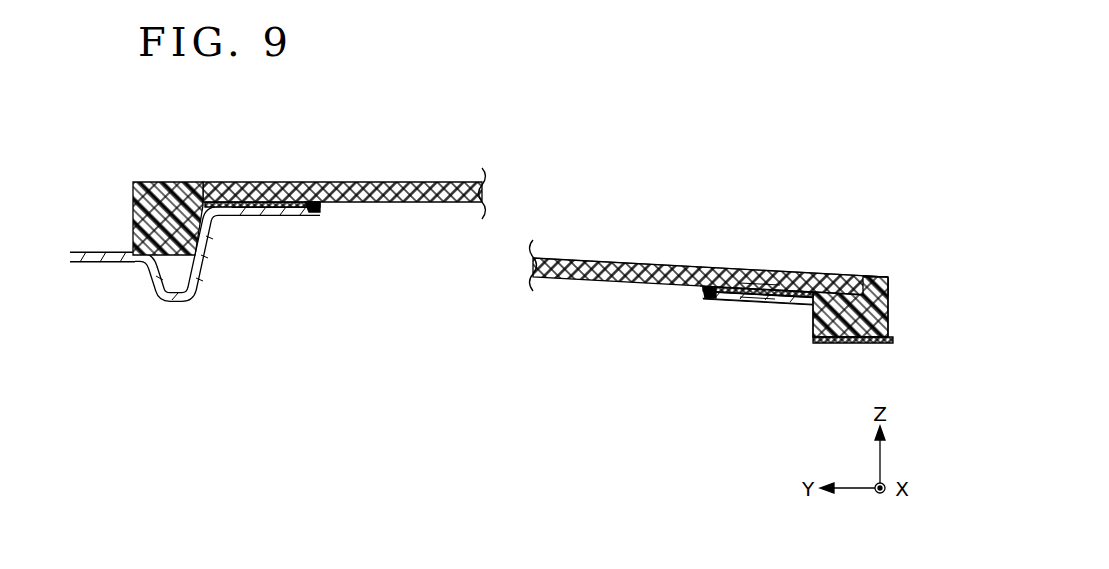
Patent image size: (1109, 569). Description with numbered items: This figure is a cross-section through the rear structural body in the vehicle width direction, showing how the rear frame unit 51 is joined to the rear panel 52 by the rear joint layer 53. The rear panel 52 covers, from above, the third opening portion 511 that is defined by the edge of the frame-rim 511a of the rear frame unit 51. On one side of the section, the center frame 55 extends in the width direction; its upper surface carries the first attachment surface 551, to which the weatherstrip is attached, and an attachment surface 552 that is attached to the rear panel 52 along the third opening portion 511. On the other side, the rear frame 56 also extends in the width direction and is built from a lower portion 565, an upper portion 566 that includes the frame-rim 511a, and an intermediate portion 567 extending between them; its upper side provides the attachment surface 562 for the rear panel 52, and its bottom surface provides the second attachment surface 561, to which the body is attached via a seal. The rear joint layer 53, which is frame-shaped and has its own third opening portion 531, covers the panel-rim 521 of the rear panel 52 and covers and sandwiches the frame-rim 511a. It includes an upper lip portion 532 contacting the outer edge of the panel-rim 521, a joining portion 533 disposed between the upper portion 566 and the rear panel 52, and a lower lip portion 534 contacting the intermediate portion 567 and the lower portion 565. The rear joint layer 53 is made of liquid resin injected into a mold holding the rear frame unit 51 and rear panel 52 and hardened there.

The rear frame unit 51 is at (697, 90).
The rear panel 52 is at (440, 182).
The panel-rim 521 is at (236, 190).
The rear joint layer 53 is at (171, 182).
The third opening portion 531 is at (318, 204).
The upper lip portion 532 is at (893, 298).
The joining portion 533 is at (745, 282).
The lower lip portion 534 is at (882, 300).
The center frame 55 is at (176, 303).
The first attachment surface 551 is at (96, 251).
The attachment surface 552 is at (258, 208).
The rear frame 56 is at (752, 301).
The second attachment surface 561 is at (843, 340).
The attachment surface 562 is at (779, 297).
The lower portion 565 is at (888, 339).
The upper portion 566 is at (758, 298).
The intermediate portion 567 is at (814, 298).
The third opening portion 511 is at (306, 216).
The frame-rim 511a is at (295, 216).